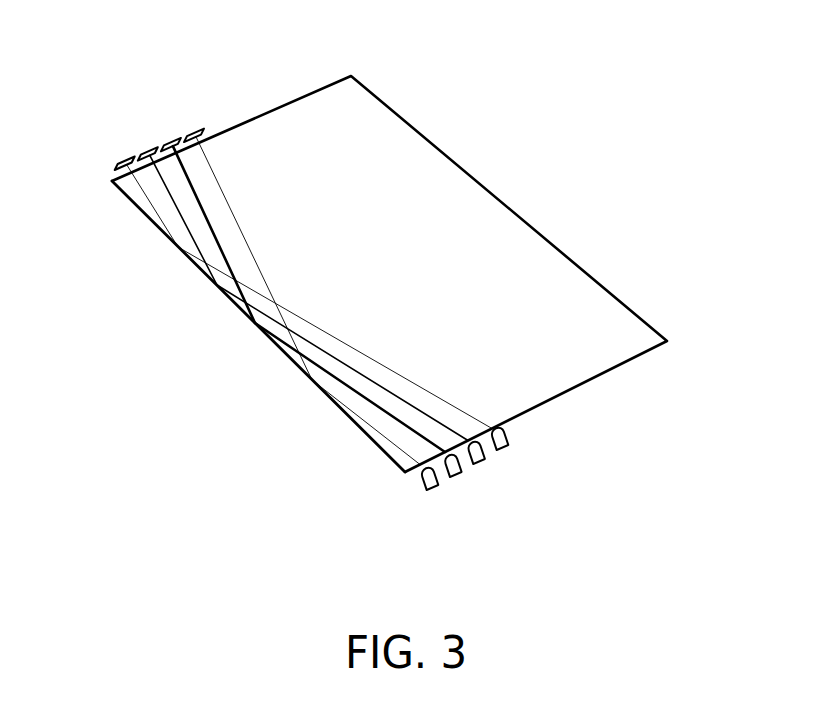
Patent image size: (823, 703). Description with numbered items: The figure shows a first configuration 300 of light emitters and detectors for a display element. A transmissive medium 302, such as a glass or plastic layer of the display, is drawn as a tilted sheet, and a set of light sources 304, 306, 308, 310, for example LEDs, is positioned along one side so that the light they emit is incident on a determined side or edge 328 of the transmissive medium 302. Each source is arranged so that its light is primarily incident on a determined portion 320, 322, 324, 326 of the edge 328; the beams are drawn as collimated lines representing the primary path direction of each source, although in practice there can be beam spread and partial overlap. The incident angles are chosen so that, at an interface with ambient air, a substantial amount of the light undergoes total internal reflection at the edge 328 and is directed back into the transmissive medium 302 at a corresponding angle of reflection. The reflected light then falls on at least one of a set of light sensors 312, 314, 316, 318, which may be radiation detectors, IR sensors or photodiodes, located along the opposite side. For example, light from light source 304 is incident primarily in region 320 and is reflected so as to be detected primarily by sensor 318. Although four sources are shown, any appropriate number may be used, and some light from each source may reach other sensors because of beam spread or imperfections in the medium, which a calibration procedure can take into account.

The configuration 300 is at (712, 105).
The transmissive medium 302 is at (447, 156).
The light source 304 is at (432, 493).
The light source 306 is at (457, 480).
The light source 308 is at (480, 467).
The light source 310 is at (503, 450).
The light sensor 312 is at (116, 165).
The light sensor 314 is at (141, 155).
The light sensor 316 is at (164, 145).
The light sensor 318 is at (187, 136).
The determined portion of the edge 320 is at (306, 390).
The determined portion of the edge 322 is at (262, 346).
The determined portion of the edge 324 is at (221, 305).
The determined portion of the edge 326 is at (177, 263).
The edge 328 is at (387, 457).